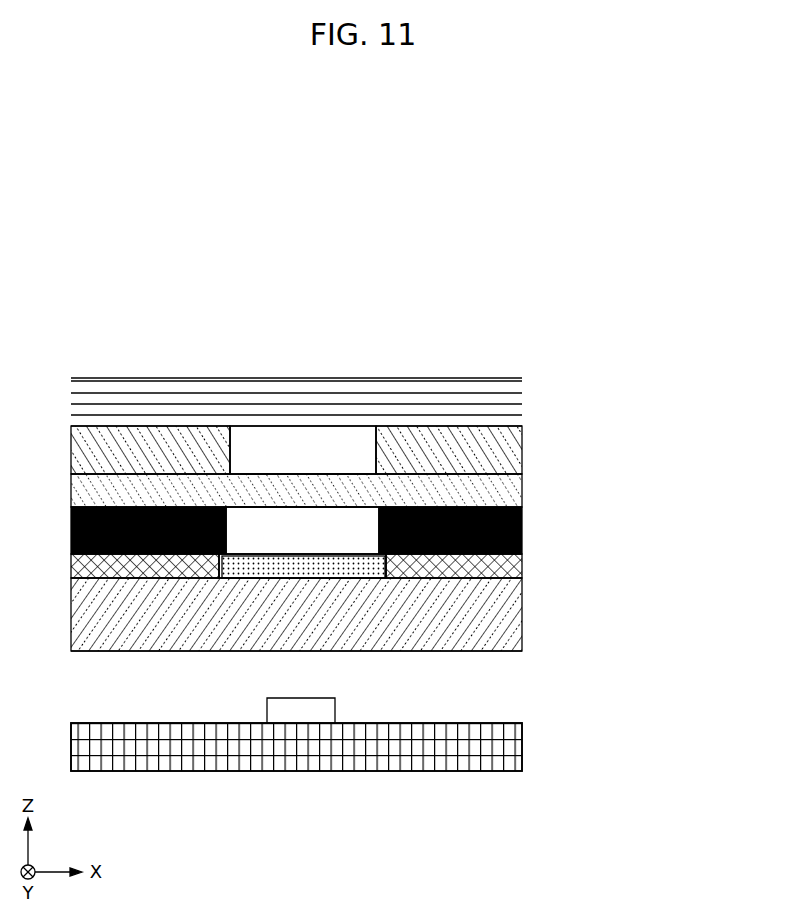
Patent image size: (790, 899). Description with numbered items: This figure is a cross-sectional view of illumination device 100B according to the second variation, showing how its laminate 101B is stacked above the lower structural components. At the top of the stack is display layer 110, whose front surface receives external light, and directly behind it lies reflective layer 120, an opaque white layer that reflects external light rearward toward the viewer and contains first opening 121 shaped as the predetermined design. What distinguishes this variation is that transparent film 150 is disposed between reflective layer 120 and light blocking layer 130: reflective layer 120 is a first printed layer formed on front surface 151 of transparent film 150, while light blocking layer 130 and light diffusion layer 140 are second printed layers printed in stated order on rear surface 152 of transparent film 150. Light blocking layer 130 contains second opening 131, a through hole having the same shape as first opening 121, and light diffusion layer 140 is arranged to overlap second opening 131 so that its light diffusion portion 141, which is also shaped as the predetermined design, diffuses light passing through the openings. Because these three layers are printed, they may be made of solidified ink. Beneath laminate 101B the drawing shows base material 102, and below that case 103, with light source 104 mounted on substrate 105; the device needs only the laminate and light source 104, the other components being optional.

The illumination device 100B is at (480, 341).
The laminate 101B is at (641, 583).
The base material 102 is at (514, 617).
The case 103 is at (498, 683).
The light source 104 is at (335, 707).
The substrate 105 is at (512, 750).
The display layer 110 is at (522, 404).
The reflective layer 120 is at (522, 453).
The first opening 121 is at (241, 440).
The light blocking layer 130 is at (522, 530).
The second opening 131 is at (247, 533).
The light diffusion layer 140 is at (522, 571).
The light diffusion portion 141 is at (342, 571).
The transparent film 150 is at (522, 490).
The front surface 151 is at (303, 473).
The rear surface 152 is at (302, 508).